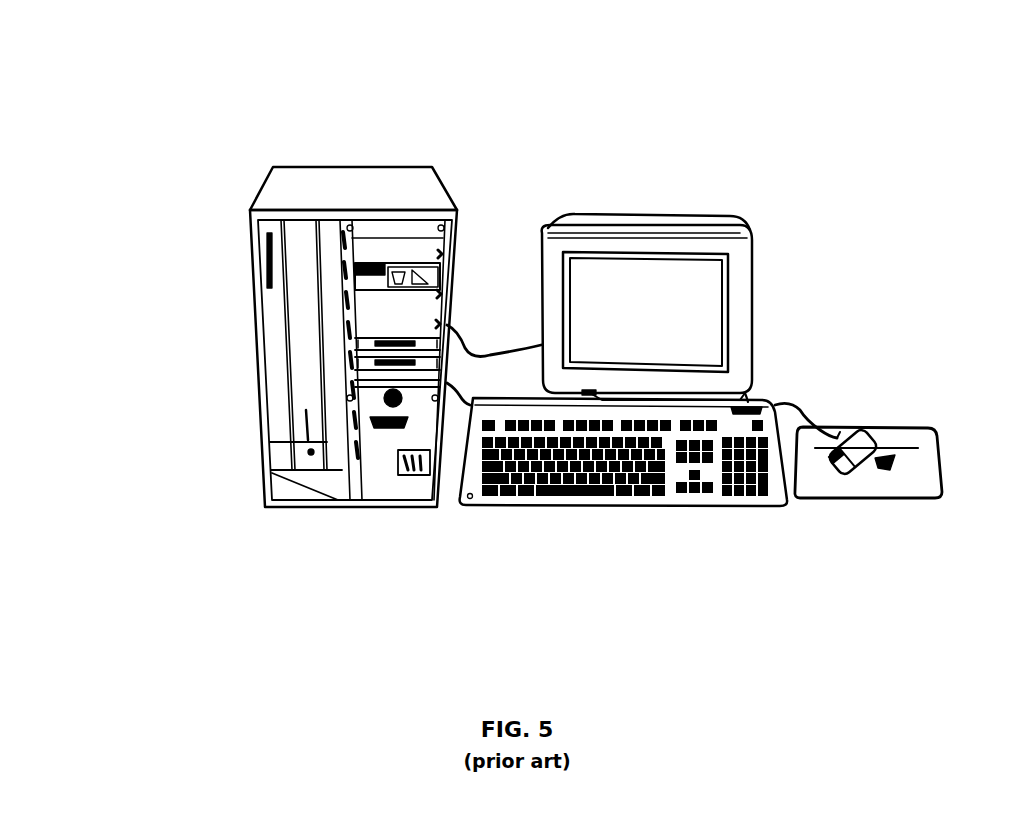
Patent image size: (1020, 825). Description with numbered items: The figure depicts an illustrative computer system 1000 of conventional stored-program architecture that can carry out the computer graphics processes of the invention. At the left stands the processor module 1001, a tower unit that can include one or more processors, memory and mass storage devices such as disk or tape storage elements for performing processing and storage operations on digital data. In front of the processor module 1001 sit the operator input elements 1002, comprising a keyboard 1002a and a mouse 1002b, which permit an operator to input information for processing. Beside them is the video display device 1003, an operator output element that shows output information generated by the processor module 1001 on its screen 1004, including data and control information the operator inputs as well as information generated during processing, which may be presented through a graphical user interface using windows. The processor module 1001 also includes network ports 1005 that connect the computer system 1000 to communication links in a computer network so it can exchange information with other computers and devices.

The computer system 1000 is at (187, 97).
The processor module 1001 is at (362, 166).
The operator input elements 1002 is at (778, 553).
The keyboard 1002a is at (660, 511).
The mouse 1002b is at (926, 503).
The video display device 1003 is at (762, 311).
The screen 1004 is at (677, 326).
The network ports 1005 is at (258, 352).